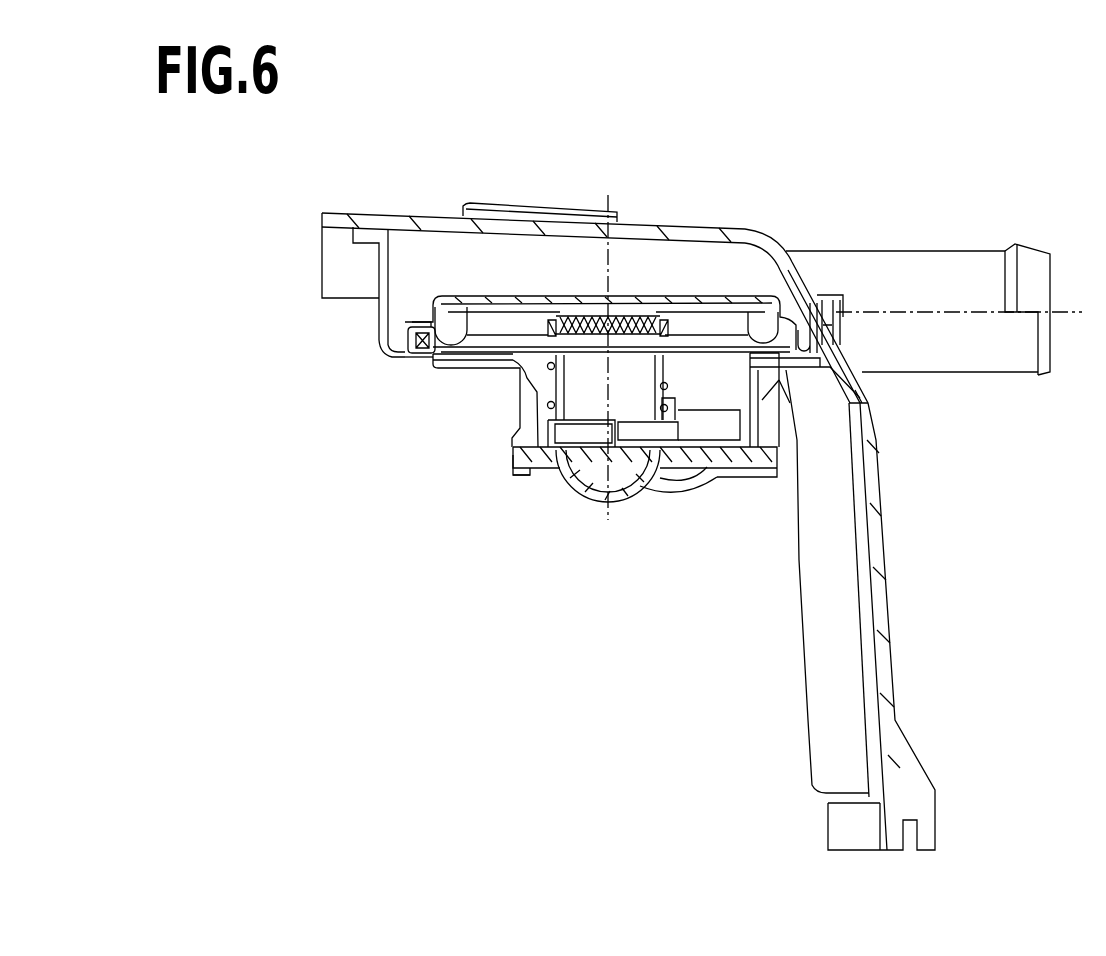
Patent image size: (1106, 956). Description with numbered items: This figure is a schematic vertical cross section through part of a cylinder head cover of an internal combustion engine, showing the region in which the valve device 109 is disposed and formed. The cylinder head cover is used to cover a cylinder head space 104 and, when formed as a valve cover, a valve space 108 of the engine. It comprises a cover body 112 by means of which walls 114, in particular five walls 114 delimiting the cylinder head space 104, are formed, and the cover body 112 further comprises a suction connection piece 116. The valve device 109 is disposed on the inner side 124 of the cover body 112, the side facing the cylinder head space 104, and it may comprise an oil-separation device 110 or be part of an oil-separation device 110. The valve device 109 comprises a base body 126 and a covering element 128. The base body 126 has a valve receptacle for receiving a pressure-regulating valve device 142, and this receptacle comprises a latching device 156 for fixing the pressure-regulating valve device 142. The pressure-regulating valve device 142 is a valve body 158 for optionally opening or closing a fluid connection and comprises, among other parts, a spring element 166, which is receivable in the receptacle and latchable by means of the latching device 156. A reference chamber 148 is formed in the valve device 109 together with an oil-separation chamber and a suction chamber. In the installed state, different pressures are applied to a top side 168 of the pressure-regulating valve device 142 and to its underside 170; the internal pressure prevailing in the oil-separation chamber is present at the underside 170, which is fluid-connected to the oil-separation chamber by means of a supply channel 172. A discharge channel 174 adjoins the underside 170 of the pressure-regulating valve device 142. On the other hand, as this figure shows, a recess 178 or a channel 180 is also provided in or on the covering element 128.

The cylinder head space 104 is at (640, 426).
The valve space 108 is at (632, 621).
The valve device 109 is at (511, 489).
The oil-separation device 110 is at (506, 480).
The cover body 112 is at (708, 228).
The walls 114 is at (375, 223).
The suction connection piece 116 is at (950, 275).
The inner side 124 is at (702, 705).
The base body 126 is at (382, 328).
The covering element 128 is at (662, 483).
The pressure-regulating valve device 142 is at (531, 275).
The reference chamber 148 is at (655, 268).
The latching device 156 is at (404, 353).
The valve body 158 is at (625, 268).
The spring element 166 is at (553, 367).
The top side 168 is at (724, 266).
The underside 170 is at (486, 340).
The supply channel 172 is at (713, 382).
The discharge channel 174 is at (580, 397).
The recess 178 is at (558, 480).
The channel 180 is at (608, 480).